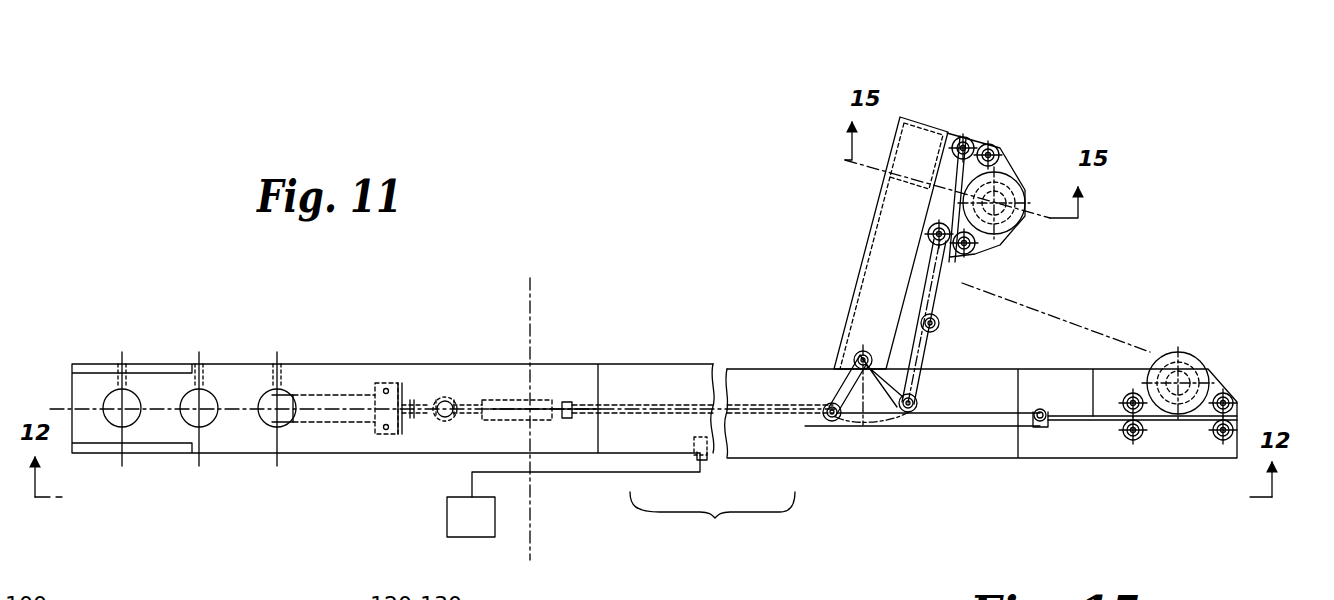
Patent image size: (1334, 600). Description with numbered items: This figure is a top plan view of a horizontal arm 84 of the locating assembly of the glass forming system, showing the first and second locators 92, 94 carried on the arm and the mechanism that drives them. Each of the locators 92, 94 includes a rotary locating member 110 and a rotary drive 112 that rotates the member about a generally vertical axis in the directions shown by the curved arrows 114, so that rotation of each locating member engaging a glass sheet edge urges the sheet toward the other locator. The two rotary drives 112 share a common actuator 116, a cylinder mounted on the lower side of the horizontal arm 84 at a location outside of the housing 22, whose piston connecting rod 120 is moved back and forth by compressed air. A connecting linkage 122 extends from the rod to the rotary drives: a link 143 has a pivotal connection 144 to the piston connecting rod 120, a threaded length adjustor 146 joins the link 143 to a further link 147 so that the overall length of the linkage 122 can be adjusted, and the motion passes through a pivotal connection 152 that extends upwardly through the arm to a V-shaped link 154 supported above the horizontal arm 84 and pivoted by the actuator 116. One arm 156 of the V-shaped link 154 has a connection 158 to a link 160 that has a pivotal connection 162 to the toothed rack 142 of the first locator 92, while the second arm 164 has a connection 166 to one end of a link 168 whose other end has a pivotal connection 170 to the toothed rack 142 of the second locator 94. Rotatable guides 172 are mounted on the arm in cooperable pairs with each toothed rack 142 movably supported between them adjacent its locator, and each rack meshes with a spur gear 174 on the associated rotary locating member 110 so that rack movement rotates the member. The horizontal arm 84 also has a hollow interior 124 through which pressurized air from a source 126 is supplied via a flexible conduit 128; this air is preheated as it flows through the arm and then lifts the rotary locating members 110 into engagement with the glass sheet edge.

The housing 22 is at (528, 290).
The horizontal arm 84 is at (624, 293).
The first locator 92 is at (1216, 360).
The second locator 94 is at (1020, 178).
The rotary locating member 110 is at (1005, 238).
The rotary drive 112 is at (963, 268).
The curved arrows 114 is at (1022, 232).
The actuator 116 is at (343, 397).
The piston connecting rod 120 is at (420, 402).
The connecting linkage 122 is at (623, 420).
The hollow interior 124 is at (713, 398).
The source 126 is at (467, 537).
The flexible conduit 128 is at (562, 475).
The toothed rack 142 is at (955, 258).
The link 143 is at (460, 418).
The pivotal connection 144 is at (452, 400).
The threaded length adjustor 146 is at (543, 402).
The link 147 is at (612, 405).
The pivotal connection 152 is at (860, 355).
The V-shaped link 154 is at (900, 398).
The arm 156 is at (825, 408).
The connection 158 is at (834, 422).
The link 160 is at (918, 408).
The pivotal connection 162 is at (1040, 410).
The second arm 164 is at (880, 380).
The connection 166 is at (920, 385).
The link 168 is at (928, 382).
The pivotal connection 170 is at (939, 325).
The rotatable guides 172 is at (987, 143).
The spur gear 174 is at (1003, 175).